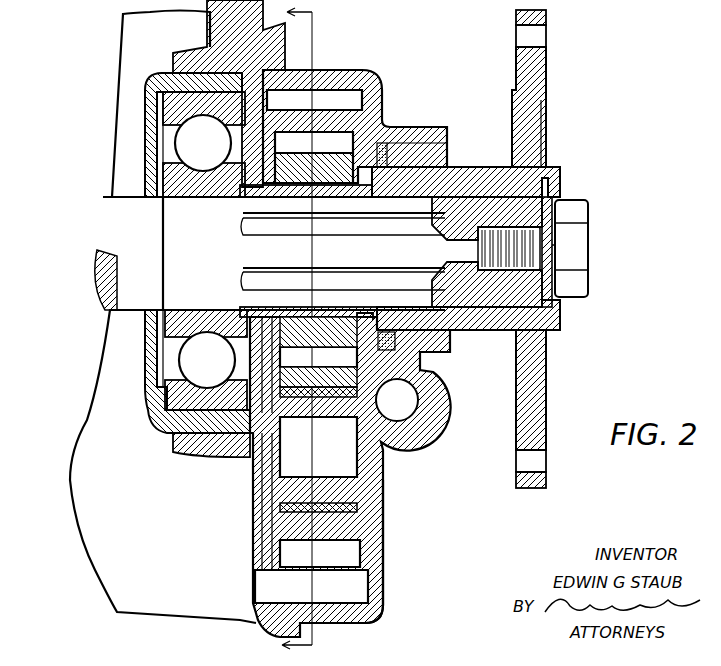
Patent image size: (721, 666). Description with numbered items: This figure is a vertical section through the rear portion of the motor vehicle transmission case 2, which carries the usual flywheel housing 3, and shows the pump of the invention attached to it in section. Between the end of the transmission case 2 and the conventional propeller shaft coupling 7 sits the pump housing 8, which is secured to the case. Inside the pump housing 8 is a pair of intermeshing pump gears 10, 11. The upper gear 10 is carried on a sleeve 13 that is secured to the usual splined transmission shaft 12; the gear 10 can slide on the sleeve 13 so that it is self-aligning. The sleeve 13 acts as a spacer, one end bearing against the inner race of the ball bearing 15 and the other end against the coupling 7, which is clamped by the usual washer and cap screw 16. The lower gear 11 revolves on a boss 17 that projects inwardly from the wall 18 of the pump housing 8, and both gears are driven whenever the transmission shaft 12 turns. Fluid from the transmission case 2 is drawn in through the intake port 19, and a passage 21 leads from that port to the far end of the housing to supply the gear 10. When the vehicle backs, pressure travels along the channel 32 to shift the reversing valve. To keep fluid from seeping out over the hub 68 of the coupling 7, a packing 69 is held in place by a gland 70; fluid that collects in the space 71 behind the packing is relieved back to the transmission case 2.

The motor vehicle transmission case 2 is at (80, 463).
The flywheel housing 3 is at (310, 334).
The propeller shaft coupling 7 is at (538, 62).
The pump housing 8 is at (375, 524).
The pump gear 10 is at (345, 143).
The pump gear 11 is at (347, 552).
The splined transmission shaft 12 is at (110, 202).
The sleeve 13 is at (247, 192).
The ball bearing 15 is at (170, 182).
The washer and cap screw 16 is at (577, 240).
The boss 17 is at (323, 490).
The wall of the pump housing 18 is at (380, 457).
The intake port 19 is at (270, 588).
The passage 21 is at (348, 100).
The channel 32 is at (403, 402).
The hub of the coupling 68 is at (452, 180).
The packing 69 is at (410, 145).
The gland 70 is at (443, 352).
The space 71 is at (363, 316).